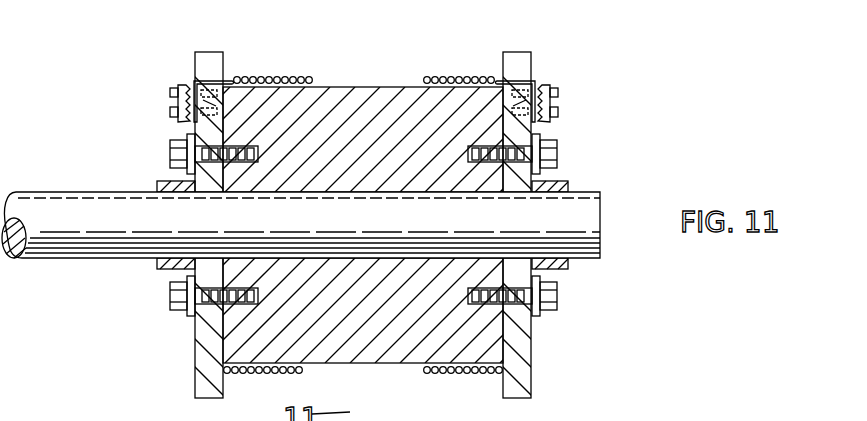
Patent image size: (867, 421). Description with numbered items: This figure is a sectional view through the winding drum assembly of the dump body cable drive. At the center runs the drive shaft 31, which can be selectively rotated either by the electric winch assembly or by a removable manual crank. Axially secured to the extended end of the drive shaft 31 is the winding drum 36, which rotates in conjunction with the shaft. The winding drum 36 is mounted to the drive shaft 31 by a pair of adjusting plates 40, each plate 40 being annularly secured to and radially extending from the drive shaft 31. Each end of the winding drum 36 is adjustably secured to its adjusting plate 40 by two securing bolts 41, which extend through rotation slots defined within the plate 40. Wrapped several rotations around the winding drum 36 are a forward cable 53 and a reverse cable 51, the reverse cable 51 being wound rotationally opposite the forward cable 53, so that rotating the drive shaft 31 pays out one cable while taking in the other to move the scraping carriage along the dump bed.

The drive shaft 31 is at (62, 202).
The winding drum 36 is at (345, 92).
The adjusting plate 40 is at (196, 359).
The securing bolt 41 is at (176, 158).
The reverse cable 51 is at (456, 77).
The forward cable 53 is at (258, 77).